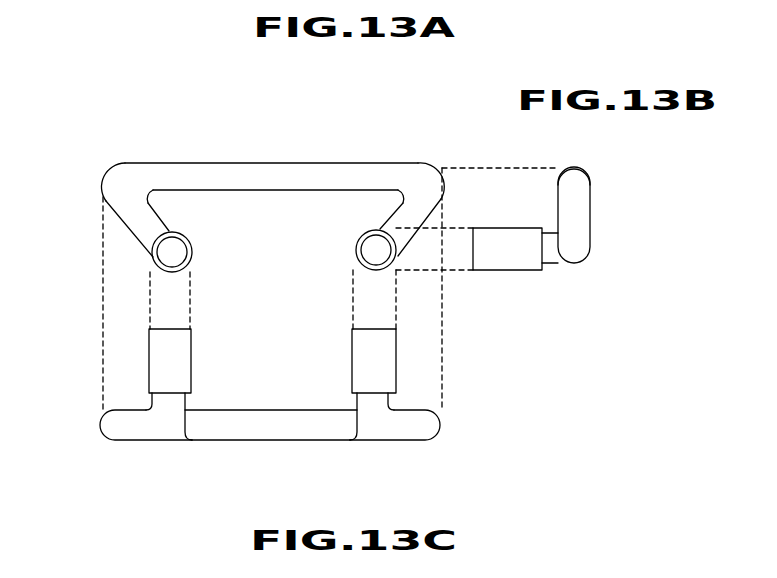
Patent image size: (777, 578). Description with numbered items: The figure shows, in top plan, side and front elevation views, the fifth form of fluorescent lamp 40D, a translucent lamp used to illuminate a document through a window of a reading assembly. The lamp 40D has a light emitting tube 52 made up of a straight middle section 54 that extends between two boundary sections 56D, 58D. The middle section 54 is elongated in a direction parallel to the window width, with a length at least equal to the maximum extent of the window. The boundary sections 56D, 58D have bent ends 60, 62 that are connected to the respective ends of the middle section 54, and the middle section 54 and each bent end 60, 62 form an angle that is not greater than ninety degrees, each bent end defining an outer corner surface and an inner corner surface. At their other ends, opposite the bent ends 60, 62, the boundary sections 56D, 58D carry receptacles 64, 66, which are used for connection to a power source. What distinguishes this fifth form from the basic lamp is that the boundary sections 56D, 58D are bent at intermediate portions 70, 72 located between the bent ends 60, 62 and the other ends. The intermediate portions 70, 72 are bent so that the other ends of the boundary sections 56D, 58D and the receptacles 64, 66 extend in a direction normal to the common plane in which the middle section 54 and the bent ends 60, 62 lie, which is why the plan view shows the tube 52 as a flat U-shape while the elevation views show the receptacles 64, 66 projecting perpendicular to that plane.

In FIG. 13A, the fluorescent lamp 40D is at (196, 128).
In FIG. 13A, the light emitting tube 52 is at (373, 160).
In FIG. 13A, the straight middle section 54 is at (288, 160).
In FIG. 13C, the straight middle section 54 is at (274, 408).
In FIG. 13A, the boundary section 56D is at (128, 228).
In FIG. 13A, the boundary section 58D is at (390, 207).
In FIG. 13B, the boundary section 58D is at (592, 220).
In FIG. 13A, the bent end 60 is at (106, 172).
In FIG. 13C, the bent end 60 is at (100, 442).
In FIG. 13A, the bent end 62 is at (447, 170).
In FIG. 13B, the bent end 62 is at (578, 166).
In FIG. 13C, the bent end 62 is at (444, 430).
In FIG. 13A, the receptacle 64 is at (194, 250).
In FIG. 13C, the receptacle 64 is at (193, 362).
In FIG. 13A, the receptacle 66 is at (353, 243).
In FIG. 13B, the receptacle 66 is at (515, 272).
In FIG. 13C, the receptacle 66 is at (350, 355).
In FIG. 13C, the intermediate portion 70 is at (186, 442).
In FIG. 13B, the intermediate portion 72 is at (575, 266).
In FIG. 13C, the intermediate portion 72 is at (367, 442).